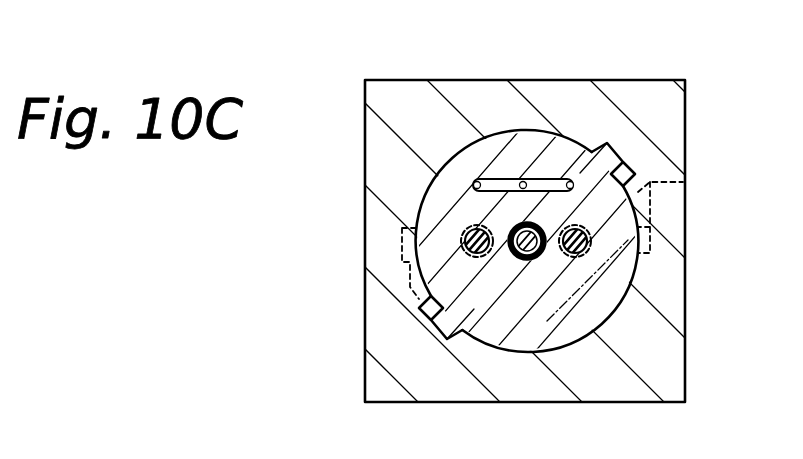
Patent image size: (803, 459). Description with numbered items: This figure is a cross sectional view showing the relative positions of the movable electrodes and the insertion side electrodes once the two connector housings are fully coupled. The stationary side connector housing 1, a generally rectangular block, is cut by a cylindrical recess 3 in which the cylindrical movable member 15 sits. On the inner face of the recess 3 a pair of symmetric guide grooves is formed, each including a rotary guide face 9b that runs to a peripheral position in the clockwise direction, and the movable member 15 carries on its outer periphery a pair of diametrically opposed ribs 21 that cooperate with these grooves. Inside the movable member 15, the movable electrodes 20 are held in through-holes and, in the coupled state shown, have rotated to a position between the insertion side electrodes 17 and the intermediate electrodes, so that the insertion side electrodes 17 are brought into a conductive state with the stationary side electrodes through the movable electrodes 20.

The stationary side connector housing 1 is at (500, 60).
The cylindrical recess 3 is at (588, 336).
The rotary guide face 9b is at (410, 279).
The movable member 15 is at (494, 332).
The insertion side electrode 17 is at (466, 232).
The movable electrode 20 is at (472, 226).
The rib 21 is at (633, 166).